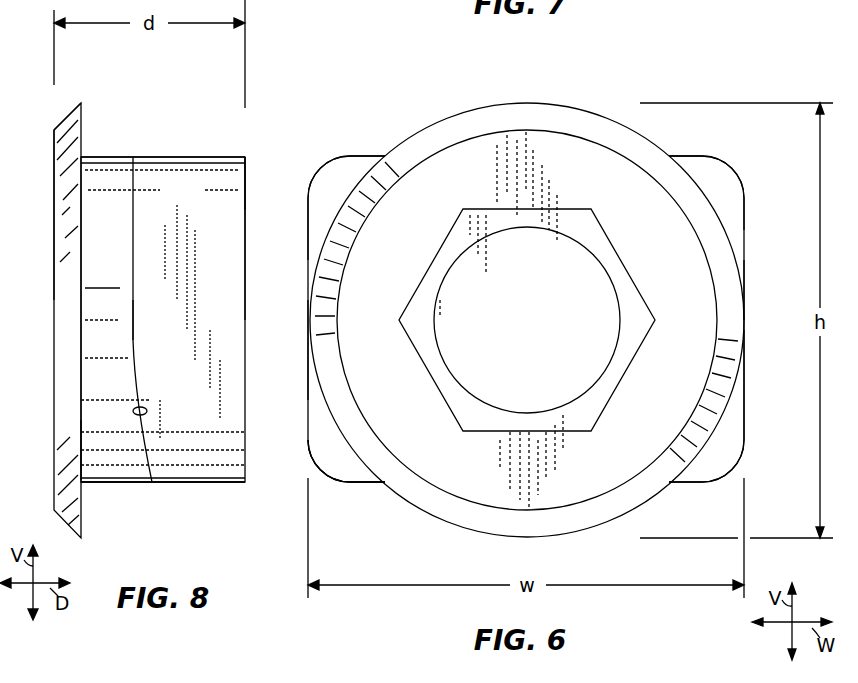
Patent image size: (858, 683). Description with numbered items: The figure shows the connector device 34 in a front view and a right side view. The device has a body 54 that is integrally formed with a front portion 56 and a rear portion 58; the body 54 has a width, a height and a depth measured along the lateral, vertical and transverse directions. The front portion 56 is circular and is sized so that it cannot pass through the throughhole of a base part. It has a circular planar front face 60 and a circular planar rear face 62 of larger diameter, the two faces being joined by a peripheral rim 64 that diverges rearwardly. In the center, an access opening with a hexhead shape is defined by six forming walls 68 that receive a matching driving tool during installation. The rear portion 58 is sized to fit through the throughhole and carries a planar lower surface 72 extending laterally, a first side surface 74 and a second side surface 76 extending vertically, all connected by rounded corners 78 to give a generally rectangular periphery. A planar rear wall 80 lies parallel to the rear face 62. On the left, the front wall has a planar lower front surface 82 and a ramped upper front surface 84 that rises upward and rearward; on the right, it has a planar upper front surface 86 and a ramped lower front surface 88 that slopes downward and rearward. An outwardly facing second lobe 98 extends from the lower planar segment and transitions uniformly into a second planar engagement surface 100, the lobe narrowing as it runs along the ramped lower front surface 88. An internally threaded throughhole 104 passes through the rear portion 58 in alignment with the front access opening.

In FIG. 6, the connector device 34 is at (632, 88).
In FIG. 8, the connector device 34 is at (268, 100).
In FIG. 6, the body 54 is at (672, 152).
In FIG. 8, the body 54 is at (92, 490).
In FIG. 6, the front portion 56 is at (540, 100).
In FIG. 8, the front portion 56 is at (54, 342).
In FIG. 6, the rear portion 58 is at (718, 165).
In FIG. 8, the rear portion 58 is at (250, 162).
In FIG. 6, the front face 60 is at (575, 150).
In FIG. 8, the front face 60 is at (54, 240).
In FIG. 8, the rear face 62 is at (81, 140).
In FIG. 6, the peripheral rim 64 is at (735, 300).
In FIG. 8, the peripheral rim 64 is at (56, 160).
In FIG. 6, the forming walls 68 is at (620, 266).
In FIG. 6, the lower surface 72 is at (372, 478).
In FIG. 6, the first side surface 74 is at (308, 360).
In FIG. 6, the second side surface 76 is at (744, 368).
In FIG. 8, the second side surface 76 is at (234, 274).
In FIG. 6, the rounded corners 78 is at (325, 165).
In FIG. 8, the rounded corners 78 is at (180, 157).
In FIG. 8, the rear wall 80 is at (247, 197).
In FIG. 6, the lower front surface 82 is at (325, 425).
In FIG. 6, the ramped upper front surface 84 is at (320, 205).
In FIG. 6, the upper front surface 86 is at (740, 215).
In FIG. 8, the upper front surface 86 is at (138, 345).
In FIG. 6, the ramped lower front surface 88 is at (730, 432).
In FIG. 8, the ramped lower front surface 88 is at (140, 413).
In FIG. 8, the second lobe 98 is at (90, 412).
In FIG. 8, the second planar engagement surface 100 is at (110, 288).
In FIG. 6, the internally threaded throughhole 104 is at (527, 228).